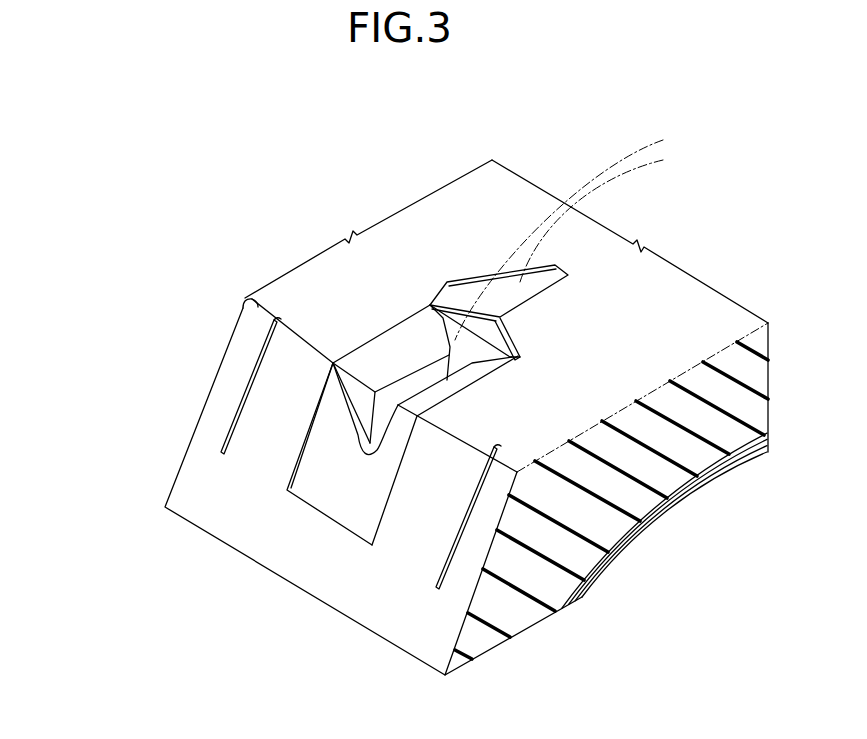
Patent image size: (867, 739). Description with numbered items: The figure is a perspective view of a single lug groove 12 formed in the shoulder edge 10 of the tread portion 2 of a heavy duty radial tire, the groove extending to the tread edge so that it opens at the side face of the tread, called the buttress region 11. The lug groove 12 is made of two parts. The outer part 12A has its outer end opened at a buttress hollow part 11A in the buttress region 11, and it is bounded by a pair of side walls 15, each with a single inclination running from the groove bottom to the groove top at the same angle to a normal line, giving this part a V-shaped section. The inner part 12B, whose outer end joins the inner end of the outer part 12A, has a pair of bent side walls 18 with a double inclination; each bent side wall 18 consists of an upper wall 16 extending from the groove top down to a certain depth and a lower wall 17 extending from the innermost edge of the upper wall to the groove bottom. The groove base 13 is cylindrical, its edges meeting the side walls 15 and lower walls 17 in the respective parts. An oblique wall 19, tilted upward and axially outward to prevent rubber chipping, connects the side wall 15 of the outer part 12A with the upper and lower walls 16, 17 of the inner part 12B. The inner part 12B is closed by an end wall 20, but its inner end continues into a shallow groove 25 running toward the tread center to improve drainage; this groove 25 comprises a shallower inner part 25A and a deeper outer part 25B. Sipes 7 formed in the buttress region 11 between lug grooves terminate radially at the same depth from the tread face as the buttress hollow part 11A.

The tread portion 2 is at (677, 293).
The sipe 7 is at (223, 438).
The shoulder edge 10 is at (258, 303).
The buttress region 11 is at (277, 475).
The buttress hollow part 11A is at (360, 513).
The lug groove 12 is at (210, 343).
The outer part 12A is at (353, 448).
The inner part 12B is at (377, 352).
The groove base 13 is at (360, 457).
The side wall 15 is at (354, 428).
The upper wall 16 is at (393, 342).
The lower wall 17 is at (425, 377).
The bent side wall 18 is at (417, 279).
The oblique wall 19 is at (355, 394).
The end wall 20 is at (431, 298).
The shallow groove 25 is at (590, 235).
The shallower inner part 25A is at (697, 133).
The deeper outer part 25B is at (576, 235).